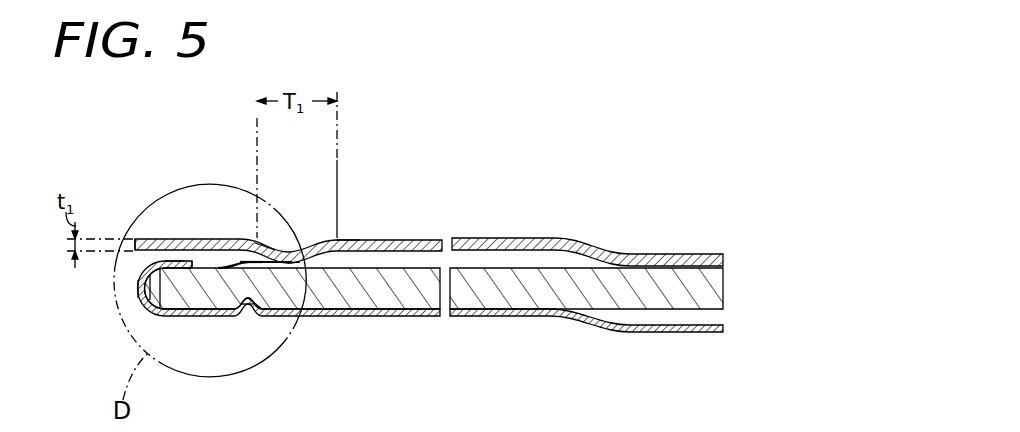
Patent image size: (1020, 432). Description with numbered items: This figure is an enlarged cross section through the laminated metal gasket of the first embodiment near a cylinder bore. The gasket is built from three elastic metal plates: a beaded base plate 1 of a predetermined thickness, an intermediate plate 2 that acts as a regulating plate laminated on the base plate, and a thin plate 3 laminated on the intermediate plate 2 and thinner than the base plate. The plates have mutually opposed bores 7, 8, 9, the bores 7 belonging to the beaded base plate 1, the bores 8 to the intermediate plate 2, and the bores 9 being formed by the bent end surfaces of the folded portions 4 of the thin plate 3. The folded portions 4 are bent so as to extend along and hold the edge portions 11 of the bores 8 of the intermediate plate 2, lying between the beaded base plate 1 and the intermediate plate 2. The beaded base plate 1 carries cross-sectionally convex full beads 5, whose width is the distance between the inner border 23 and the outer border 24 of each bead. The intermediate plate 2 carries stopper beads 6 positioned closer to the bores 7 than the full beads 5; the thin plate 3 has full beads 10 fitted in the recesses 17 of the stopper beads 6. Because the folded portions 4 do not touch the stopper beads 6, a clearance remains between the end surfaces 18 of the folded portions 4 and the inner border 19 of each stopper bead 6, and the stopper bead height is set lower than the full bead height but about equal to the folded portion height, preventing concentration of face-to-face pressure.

The beaded base plate 1 is at (558, 239).
The intermediate plate 2 is at (407, 298).
The thin plate 3 is at (357, 317).
The folded portions 4 is at (173, 261).
The full beads 5 is at (300, 256).
The stopper beads 6 is at (242, 264).
The bores 7 is at (122, 252).
The bores 8 is at (153, 274).
The bores 9 is at (138, 289).
The full beads 10 is at (245, 311).
The edge portions 11 is at (181, 316).
The recesses 17 is at (250, 311).
The end surfaces 18 is at (203, 261).
The inner border 19 is at (220, 261).
The inner border 23 is at (257, 243).
The outer border 24 is at (337, 239).